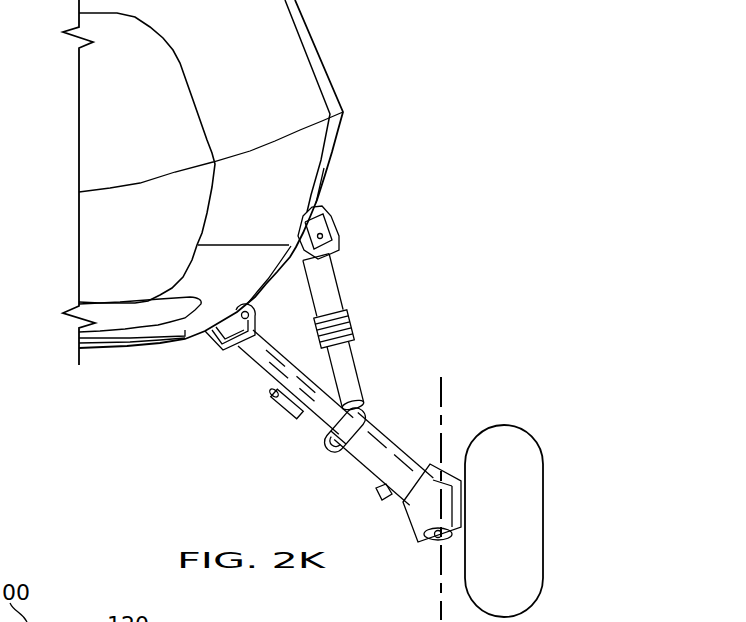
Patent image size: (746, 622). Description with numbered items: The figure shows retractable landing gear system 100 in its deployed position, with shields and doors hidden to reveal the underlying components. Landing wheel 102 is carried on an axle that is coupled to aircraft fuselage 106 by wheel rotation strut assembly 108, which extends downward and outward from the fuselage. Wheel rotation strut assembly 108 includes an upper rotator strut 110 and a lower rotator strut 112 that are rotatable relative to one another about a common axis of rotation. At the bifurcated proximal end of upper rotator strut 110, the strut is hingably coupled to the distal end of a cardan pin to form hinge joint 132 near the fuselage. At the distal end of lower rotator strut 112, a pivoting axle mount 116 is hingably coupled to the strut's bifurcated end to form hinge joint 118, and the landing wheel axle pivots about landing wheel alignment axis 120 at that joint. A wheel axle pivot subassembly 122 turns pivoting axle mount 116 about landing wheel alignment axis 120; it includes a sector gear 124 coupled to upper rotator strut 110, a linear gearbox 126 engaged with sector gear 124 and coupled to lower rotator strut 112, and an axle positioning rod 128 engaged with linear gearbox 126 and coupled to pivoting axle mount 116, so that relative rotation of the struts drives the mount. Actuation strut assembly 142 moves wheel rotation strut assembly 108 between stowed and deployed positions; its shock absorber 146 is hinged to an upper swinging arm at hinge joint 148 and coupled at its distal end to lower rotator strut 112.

The retractable landing gear system 100 is at (340, 56).
The landing wheel 102 is at (545, 532).
The aircraft fuselage 106 is at (87, 84).
The wheel rotation strut assembly 108 is at (267, 377).
The upper rotator strut 110 is at (253, 357).
The lower rotator strut 112 is at (390, 437).
The pivoting axle mount 116 is at (455, 505).
The hinge joint 118 is at (417, 533).
The landing wheel alignment axis 120 is at (443, 392).
The wheel axle pivot subassembly 122 is at (313, 444).
The sector gear 124 is at (325, 458).
The linear gearbox 126 is at (297, 425).
The axle positioning rod 128 is at (382, 488).
The hinge joint 132 is at (248, 299).
The actuation strut assembly 142 is at (347, 293).
The shock absorber 146 is at (360, 377).
The hinge joint 148 is at (340, 236).